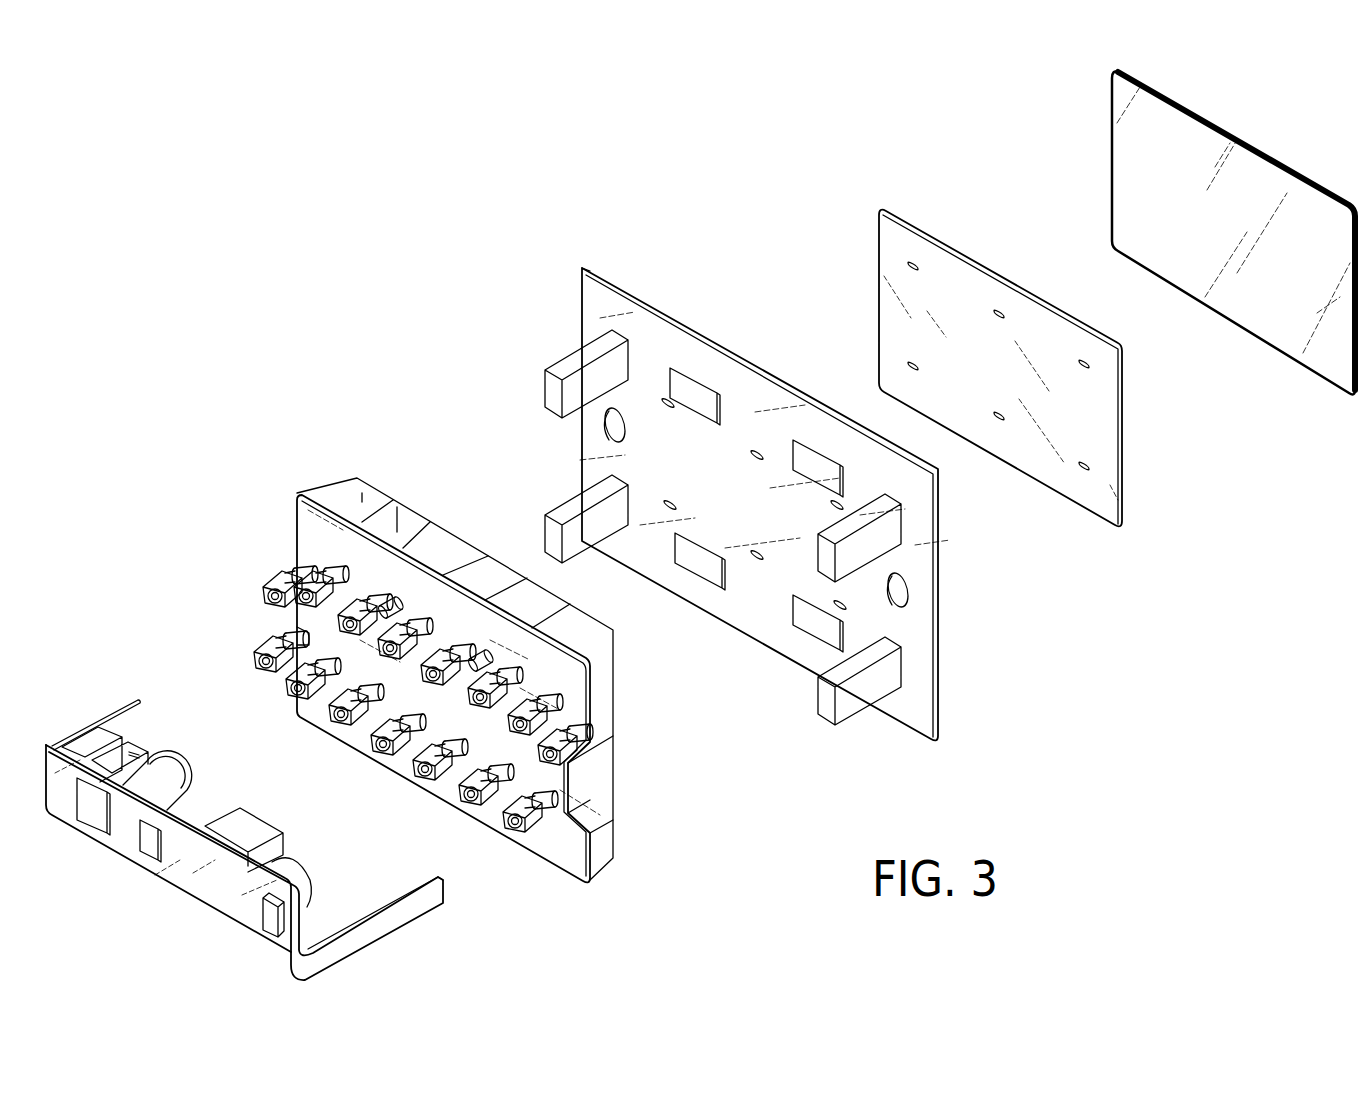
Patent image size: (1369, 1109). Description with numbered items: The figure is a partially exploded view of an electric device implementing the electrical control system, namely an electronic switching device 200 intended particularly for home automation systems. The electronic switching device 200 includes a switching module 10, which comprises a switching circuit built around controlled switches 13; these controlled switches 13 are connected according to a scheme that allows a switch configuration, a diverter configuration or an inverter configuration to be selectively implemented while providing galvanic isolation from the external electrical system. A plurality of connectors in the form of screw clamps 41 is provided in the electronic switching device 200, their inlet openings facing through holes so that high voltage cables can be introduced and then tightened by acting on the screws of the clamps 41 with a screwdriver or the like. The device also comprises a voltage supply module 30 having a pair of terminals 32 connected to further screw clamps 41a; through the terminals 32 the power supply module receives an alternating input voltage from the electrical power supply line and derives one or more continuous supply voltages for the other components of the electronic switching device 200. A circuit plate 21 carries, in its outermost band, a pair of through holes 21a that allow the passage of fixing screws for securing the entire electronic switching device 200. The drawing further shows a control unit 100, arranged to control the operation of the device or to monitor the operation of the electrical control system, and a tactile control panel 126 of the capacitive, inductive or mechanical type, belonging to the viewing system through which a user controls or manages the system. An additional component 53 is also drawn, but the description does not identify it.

The electronic switching device 200 is at (337, 243).
The switching module 10 is at (290, 475).
The controlled switch 13 is at (425, 548).
The screw clamps 41 is at (357, 603).
The screw clamps 41a is at (272, 655).
The pin 53 is at (478, 648).
The voltage supply module 30 is at (78, 703).
The terminals 32 is at (134, 752).
The control unit 100 is at (693, 562).
The circuit plate 21 is at (763, 615).
The through holes 21a is at (603, 428).
The tactile control panel 126 is at (919, 245).